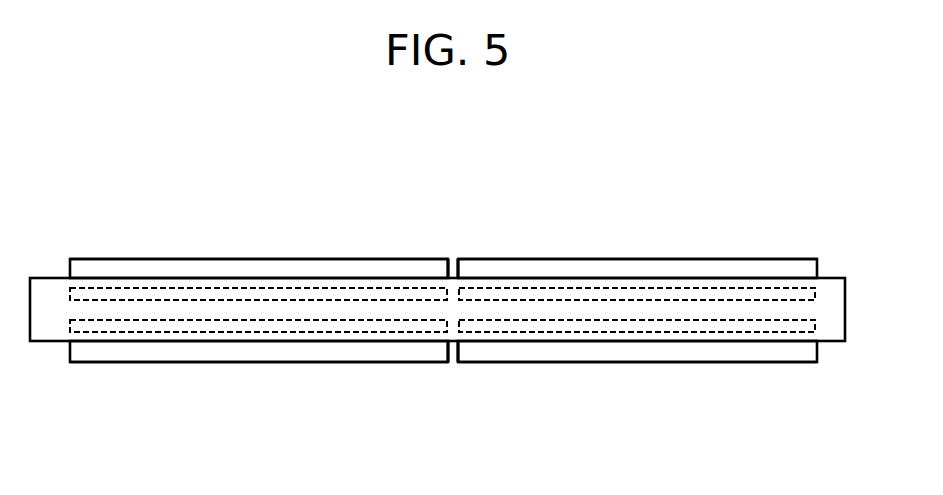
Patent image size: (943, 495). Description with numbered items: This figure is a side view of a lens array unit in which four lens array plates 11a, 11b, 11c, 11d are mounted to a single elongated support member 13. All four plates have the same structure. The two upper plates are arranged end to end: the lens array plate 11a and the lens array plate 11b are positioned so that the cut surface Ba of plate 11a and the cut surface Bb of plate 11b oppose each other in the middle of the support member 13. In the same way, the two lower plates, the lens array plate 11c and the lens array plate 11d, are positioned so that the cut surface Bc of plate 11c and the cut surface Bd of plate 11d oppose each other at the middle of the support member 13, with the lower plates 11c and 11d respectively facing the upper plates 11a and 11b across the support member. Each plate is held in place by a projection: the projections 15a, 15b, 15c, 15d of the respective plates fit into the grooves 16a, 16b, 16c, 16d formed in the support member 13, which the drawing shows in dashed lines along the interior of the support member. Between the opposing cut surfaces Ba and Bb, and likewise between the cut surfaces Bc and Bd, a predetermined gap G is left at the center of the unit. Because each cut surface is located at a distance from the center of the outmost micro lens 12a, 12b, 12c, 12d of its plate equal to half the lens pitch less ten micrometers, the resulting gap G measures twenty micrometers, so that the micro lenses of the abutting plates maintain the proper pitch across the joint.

The support member 13 is at (833, 312).
The lens array plate 11a is at (212, 266).
The lens array plate 11b is at (606, 268).
The lens array plate 11c is at (192, 362).
The lens array plate 11d is at (613, 357).
The micro lens 12a is at (291, 259).
The micro lens 12b is at (695, 259).
The micro lens 12c is at (295, 362).
The micro lens 12d is at (700, 363).
The projection 15a is at (130, 289).
The groove 16a is at (258, 228).
The projection 15b is at (778, 289).
The groove 16b is at (661, 219).
The projection 15c is at (123, 333).
The groove 16c is at (258, 388).
The projection 15d is at (778, 333).
The groove 16d is at (662, 381).
The gap G is at (455, 260).
The cut surface Ba is at (448, 262).
The cut surface Bb is at (458, 262).
The cut surface Bc is at (449, 364).
The cut surface Bd is at (458, 364).